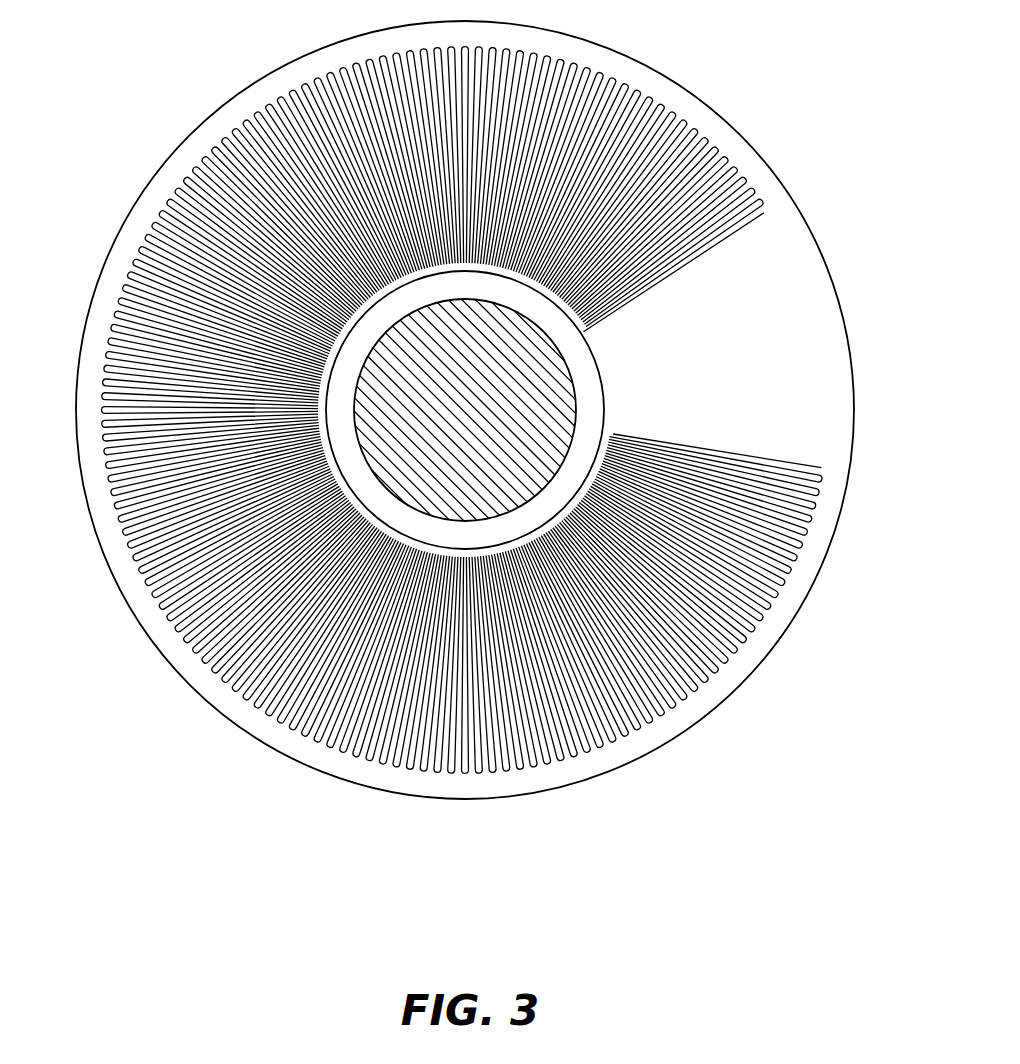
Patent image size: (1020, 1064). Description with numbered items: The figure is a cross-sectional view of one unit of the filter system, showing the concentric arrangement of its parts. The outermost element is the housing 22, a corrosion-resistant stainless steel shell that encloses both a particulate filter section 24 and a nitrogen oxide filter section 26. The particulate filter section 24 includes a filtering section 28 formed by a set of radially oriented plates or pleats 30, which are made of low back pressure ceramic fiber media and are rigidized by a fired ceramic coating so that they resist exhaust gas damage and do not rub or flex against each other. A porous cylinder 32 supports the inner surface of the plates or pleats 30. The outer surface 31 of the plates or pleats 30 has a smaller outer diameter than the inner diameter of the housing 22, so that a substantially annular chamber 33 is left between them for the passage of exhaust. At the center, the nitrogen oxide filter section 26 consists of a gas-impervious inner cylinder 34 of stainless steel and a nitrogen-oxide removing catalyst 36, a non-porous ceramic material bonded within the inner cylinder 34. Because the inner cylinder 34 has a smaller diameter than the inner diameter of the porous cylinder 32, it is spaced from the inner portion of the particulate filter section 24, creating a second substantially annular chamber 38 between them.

The housing 22 is at (822, 566).
The particulate filter section 24 is at (542, 715).
The nitrogen oxide filter section 26 is at (443, 480).
The filtering section 28 is at (610, 688).
The plates or pleats 30 is at (678, 688).
The outer surface 31 is at (750, 637).
The porous cylinder 32 is at (457, 547).
The annular chamber 33 is at (728, 678).
The inner cylinder 34 is at (403, 503).
The nitrogen-oxide removing catalyst 36 is at (400, 467).
The annular chamber 38 is at (488, 535).